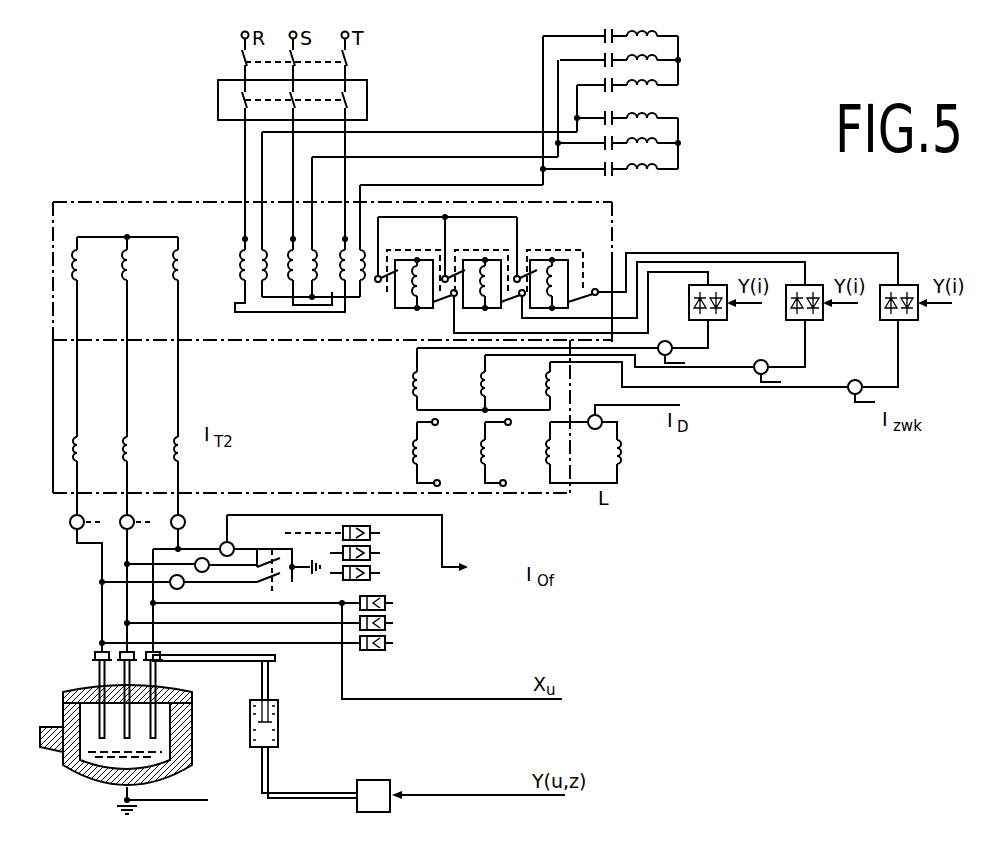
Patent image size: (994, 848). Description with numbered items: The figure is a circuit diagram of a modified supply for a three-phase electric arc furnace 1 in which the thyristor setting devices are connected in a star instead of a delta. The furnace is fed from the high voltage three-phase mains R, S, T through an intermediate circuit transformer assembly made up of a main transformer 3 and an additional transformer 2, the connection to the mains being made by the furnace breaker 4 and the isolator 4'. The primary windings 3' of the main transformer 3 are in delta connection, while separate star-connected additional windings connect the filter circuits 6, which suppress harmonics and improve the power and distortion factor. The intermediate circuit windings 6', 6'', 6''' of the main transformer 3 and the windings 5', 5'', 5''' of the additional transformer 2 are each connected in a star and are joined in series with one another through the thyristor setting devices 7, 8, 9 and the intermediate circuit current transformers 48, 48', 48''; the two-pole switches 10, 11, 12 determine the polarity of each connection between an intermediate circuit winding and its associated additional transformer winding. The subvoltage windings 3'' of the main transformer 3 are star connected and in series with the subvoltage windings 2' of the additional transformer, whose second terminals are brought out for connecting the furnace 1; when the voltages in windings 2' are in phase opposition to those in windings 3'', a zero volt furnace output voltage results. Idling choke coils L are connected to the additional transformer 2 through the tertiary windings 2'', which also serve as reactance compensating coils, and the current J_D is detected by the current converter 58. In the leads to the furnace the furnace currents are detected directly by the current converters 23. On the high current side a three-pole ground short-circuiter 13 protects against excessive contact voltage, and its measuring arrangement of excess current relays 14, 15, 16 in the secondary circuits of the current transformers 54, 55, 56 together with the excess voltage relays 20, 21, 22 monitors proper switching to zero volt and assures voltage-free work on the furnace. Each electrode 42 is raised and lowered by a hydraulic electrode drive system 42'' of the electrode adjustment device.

The three-phase electric arc furnace 1 is at (78, 688).
The additional transformer 2 is at (40, 416).
The secondary windings of additional transformer 2' is at (135, 430).
The tertiary windings 2'' is at (500, 452).
The main transformer 3 is at (40, 271).
The primary windings 3' is at (292, 270).
The subvoltage windings of main transformer 3'' is at (139, 272).
The furnace breaker 4 is at (275, 100).
The isolator 4' is at (270, 50).
The primary winding of additional transformer 5' is at (536, 400).
The primary winding of additional transformer 5'' is at (468, 397).
The primary winding of additional transformer 5''' is at (399, 393).
The filter circuits 6 is at (629, 102).
The intermediate circuit winding 6' is at (555, 269).
The intermediate circuit winding 6'' is at (481, 269).
The intermediate circuit winding 6''' is at (413, 269).
The thyristor setting device 7 is at (912, 322).
The thyristor setting device 8 is at (820, 322).
The thyristor setting device 9 is at (714, 322).
The two-pole switch 10 is at (594, 288).
The two-pole switch 11 is at (518, 300).
The two-pole switch 12 is at (450, 300).
The three-pole ground short-circuiter 13 is at (283, 585).
The excess current relay 14 is at (376, 535).
The excess current relay 15 is at (378, 555).
The excess current relay 16 is at (378, 575).
The excess voltage relay 20 is at (393, 604).
The excess voltage relay 21 is at (393, 624).
The excess voltage relay 22 is at (393, 644).
The current converters 23 is at (184, 520).
The electrode 42 is at (212, 677).
The hydraulic electrode drive system 42'' is at (303, 749).
The intermediate circuit current transformer 48 is at (861, 377).
The intermediate circuit current transformer 48' is at (768, 356).
The intermediate circuit current transformer 48'' is at (673, 339).
The current transformer 54 is at (232, 544).
The current transformer 55 is at (204, 573).
The current transformer 56 is at (175, 590).
The current converter 58 is at (590, 430).